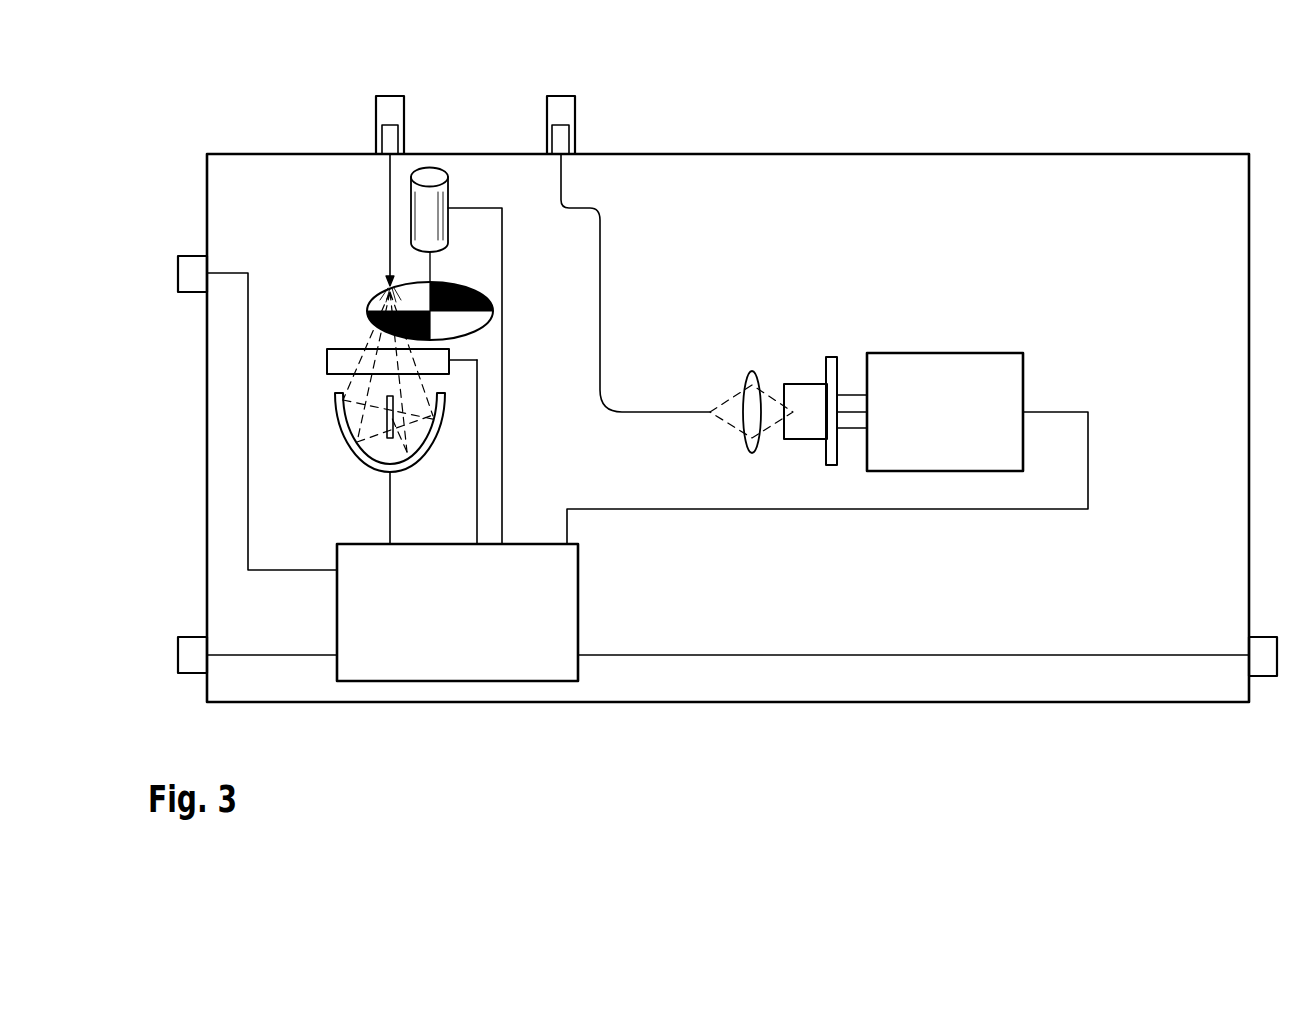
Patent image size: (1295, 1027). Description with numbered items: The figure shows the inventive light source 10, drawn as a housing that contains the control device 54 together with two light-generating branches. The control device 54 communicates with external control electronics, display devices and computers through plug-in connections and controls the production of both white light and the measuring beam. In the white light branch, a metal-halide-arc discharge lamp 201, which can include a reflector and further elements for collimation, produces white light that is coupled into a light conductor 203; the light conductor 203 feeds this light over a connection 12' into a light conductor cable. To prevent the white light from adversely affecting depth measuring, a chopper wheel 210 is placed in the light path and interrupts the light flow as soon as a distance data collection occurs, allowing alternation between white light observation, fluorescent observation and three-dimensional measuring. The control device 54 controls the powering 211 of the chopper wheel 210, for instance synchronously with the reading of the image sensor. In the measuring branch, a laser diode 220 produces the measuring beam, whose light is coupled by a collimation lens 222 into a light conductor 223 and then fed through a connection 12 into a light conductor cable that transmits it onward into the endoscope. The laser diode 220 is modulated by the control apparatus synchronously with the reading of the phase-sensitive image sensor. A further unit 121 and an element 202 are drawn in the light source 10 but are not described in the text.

The light source 10 is at (906, 138).
The connection 12 is at (628, 251).
The connection 12' is at (355, 122).
The control device 54 is at (457, 660).
The evaluation unit 121 is at (945, 353).
The metal-halide-arc discharge lamp 201 is at (337, 425).
The filter 202 is at (327, 360).
The light conductor 203 is at (390, 200).
The chopper wheel 210 is at (375, 295).
The powering 211 is at (448, 185).
The laser diode 220 is at (806, 384).
The collimation lens 222 is at (750, 370).
The light conductor 223 is at (688, 410).